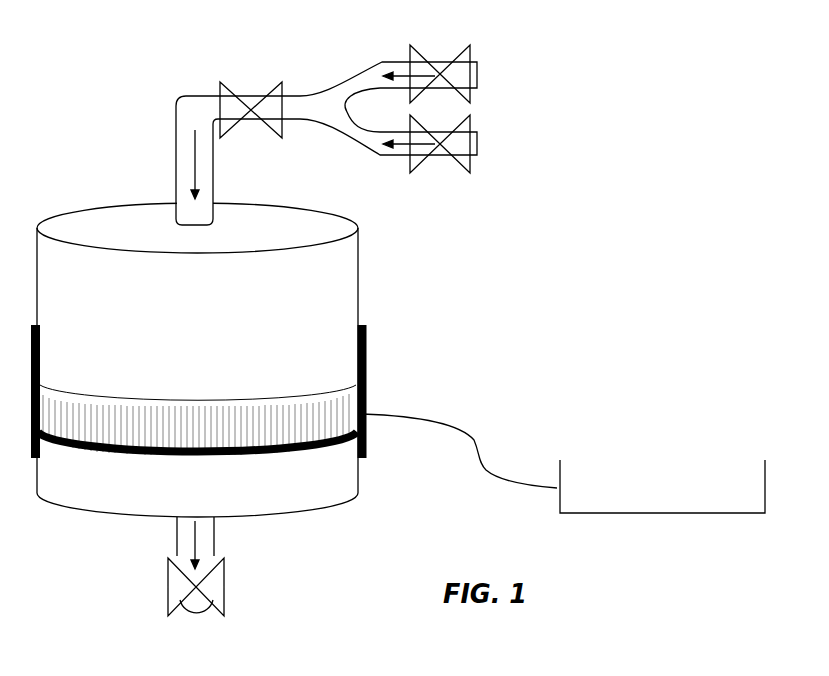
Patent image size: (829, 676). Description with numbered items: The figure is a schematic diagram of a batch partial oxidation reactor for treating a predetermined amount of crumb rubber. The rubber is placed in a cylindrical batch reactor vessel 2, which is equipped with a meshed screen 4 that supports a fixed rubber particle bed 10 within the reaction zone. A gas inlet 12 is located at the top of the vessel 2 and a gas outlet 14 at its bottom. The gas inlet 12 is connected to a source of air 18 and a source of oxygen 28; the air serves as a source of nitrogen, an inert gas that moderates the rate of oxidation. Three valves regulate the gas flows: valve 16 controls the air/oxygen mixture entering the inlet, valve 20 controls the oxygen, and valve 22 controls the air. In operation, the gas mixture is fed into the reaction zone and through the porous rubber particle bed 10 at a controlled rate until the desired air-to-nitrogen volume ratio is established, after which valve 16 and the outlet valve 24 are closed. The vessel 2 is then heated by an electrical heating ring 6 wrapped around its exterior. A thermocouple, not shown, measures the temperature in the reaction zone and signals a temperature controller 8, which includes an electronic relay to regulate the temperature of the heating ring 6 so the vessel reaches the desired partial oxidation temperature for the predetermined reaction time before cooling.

The cylindrical batch reactor vessel 2 is at (86, 504).
The meshed screen 4 is at (150, 458).
The electrical heating ring 6 is at (366, 326).
The temperature controller 8 is at (657, 462).
The rubber particle bed 10 is at (185, 403).
The gas inlet 12 is at (176, 136).
The gas outlet 14 is at (216, 556).
The valve 16 is at (262, 82).
The source of air 18 is at (334, 80).
The valve 20 is at (453, 46).
The valve 22 is at (461, 174).
The valve 24 is at (226, 606).
The source of oxygen 28 is at (342, 147).